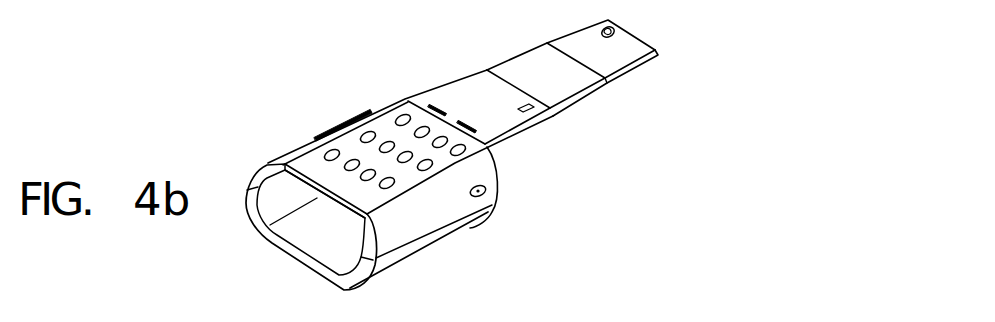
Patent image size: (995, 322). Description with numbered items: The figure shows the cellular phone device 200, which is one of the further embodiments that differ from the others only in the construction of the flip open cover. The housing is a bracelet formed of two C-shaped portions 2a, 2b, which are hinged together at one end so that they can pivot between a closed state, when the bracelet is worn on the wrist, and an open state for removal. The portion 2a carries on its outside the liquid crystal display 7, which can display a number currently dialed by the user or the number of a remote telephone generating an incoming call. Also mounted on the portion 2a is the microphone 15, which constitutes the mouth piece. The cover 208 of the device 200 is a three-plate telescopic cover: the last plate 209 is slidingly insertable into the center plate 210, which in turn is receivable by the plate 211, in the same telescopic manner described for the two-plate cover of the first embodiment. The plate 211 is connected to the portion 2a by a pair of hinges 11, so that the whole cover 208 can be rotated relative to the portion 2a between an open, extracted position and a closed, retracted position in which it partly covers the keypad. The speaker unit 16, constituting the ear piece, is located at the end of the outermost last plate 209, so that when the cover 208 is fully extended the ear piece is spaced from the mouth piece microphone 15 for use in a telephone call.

The cellular phone device 200 is at (393, 82).
The C-shaped portion 2a is at (402, 227).
The C-shaped portion 2b is at (314, 238).
The liquid crystal display 7 is at (347, 122).
The hinges 11 is at (462, 127).
The microphone 15 is at (487, 190).
The speaker unit 16 is at (615, 25).
The cover 208 is at (646, 99).
The last plate 209 is at (674, 50).
The center plate 210 is at (583, 100).
The plate 211 is at (525, 133).